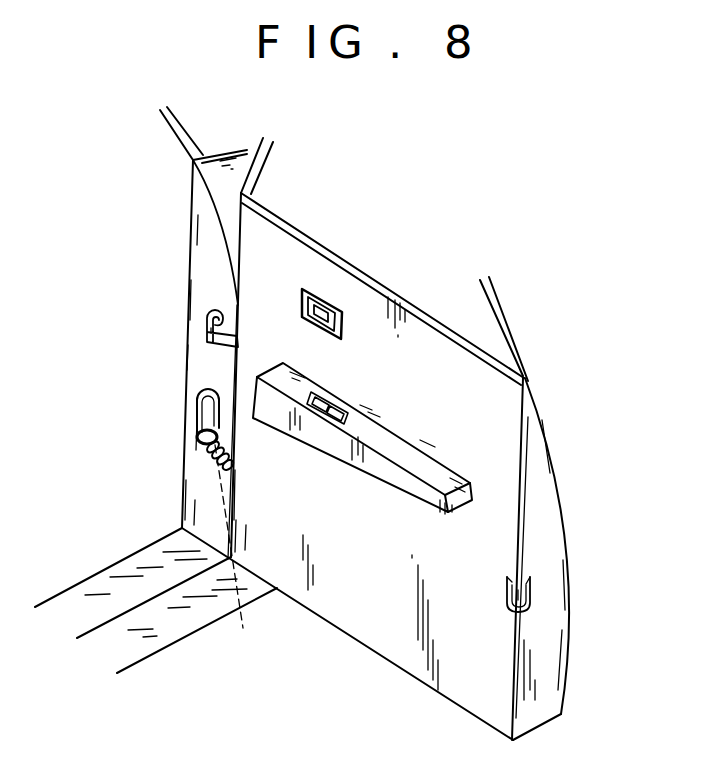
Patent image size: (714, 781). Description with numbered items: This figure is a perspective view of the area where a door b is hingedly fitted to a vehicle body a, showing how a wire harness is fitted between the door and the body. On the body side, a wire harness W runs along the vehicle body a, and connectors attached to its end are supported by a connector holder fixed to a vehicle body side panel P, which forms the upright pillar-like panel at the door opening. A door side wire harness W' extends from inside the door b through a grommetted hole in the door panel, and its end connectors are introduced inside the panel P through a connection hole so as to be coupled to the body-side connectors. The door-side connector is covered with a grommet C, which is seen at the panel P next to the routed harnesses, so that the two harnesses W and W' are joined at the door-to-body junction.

The vehicle body side panel P is at (210, 265).
The vehicle body a is at (173, 302).
The grommet C is at (196, 417).
The door b is at (557, 598).
The wire harness W is at (346, 415).
The door side wire harness W' is at (240, 554).